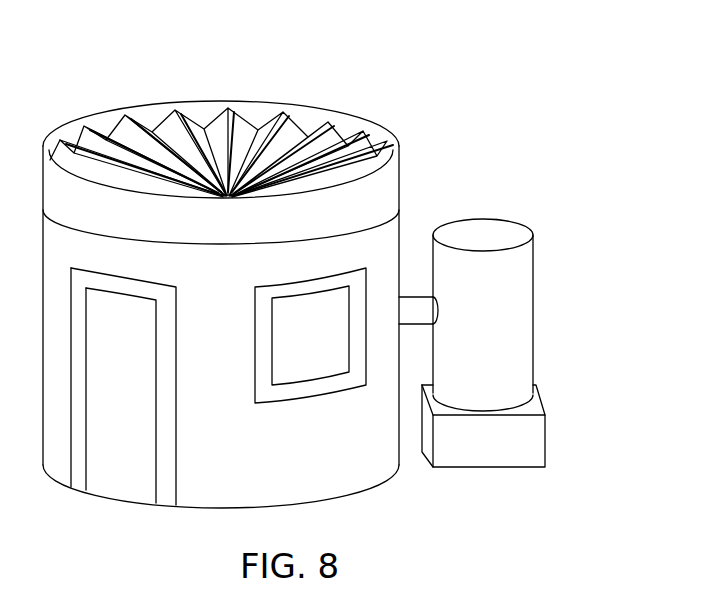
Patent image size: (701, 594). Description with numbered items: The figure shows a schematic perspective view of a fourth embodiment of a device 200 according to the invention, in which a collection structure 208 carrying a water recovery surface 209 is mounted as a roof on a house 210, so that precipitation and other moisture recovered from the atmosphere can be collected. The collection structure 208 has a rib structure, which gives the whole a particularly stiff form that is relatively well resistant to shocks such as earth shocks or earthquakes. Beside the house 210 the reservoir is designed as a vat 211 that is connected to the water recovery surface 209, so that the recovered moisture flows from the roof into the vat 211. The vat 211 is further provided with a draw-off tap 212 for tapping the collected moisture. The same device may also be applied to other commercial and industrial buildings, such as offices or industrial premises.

The device 200 is at (428, 97).
The collection structure 208 is at (345, 206).
The water recovery surface 209 is at (240, 133).
The house 210 is at (348, 467).
The vat 211 is at (510, 328).
The draw-off tap 212 is at (551, 418).